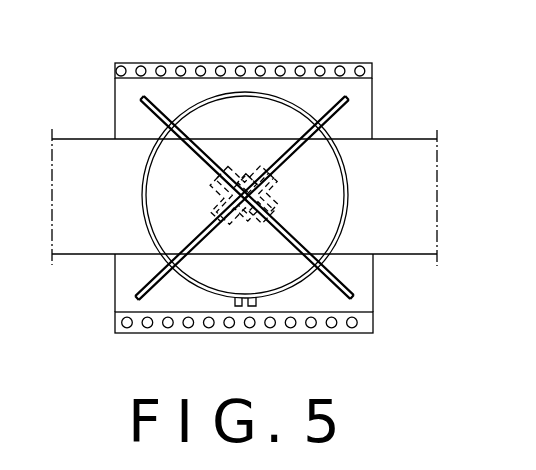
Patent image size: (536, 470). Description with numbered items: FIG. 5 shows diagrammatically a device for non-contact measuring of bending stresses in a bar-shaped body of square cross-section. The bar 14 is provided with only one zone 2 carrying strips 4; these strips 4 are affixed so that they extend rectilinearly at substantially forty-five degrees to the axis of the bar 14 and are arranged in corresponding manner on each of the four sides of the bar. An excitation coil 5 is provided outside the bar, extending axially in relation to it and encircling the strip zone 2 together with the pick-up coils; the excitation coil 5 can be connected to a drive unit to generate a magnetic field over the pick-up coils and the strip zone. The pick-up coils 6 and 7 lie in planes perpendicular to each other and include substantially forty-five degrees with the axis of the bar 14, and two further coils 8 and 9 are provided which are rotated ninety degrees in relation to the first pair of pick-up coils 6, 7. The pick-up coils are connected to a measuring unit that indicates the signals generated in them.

The zone 2 is at (247, 136).
The strips 4 is at (293, 226).
The excitation coil 5 is at (302, 70).
The pick-up coil 6 is at (338, 72).
The pick-up coil 7 is at (155, 105).
The further coil 8 is at (348, 165).
The further coil 9 is at (145, 173).
The bar 14 is at (417, 189).